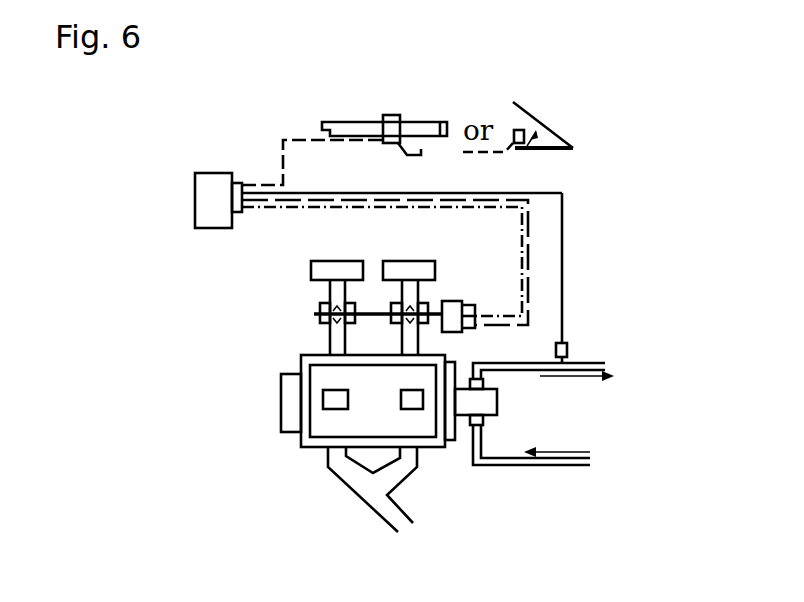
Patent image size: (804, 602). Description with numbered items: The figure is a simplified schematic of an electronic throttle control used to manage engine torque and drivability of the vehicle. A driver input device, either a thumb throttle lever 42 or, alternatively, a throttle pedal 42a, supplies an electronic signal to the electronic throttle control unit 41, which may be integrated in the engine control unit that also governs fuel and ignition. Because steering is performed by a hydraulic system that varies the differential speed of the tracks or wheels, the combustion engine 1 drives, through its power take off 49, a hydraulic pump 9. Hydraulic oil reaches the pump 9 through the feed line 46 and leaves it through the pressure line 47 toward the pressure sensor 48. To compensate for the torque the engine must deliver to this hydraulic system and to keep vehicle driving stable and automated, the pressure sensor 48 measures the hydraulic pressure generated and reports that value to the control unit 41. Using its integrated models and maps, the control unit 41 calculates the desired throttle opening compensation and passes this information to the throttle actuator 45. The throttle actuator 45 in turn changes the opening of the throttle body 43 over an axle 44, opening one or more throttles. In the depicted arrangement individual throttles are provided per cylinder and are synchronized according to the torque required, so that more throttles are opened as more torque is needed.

The combustion engine 1 is at (378, 428).
The hydraulic pump 9 is at (497, 402).
The electronic throttle control unit 41 is at (212, 183).
The thumb throttle lever 42 is at (348, 121).
The throttle pedal 42a is at (562, 108).
The throttle body 43 is at (480, 252).
The axle 44 is at (328, 292).
The throttle actuator 45 is at (476, 303).
The feed line 46 is at (536, 485).
The pressure line 47 is at (520, 372).
The pressure sensor 48 is at (570, 345).
The power take off 49 is at (280, 400).